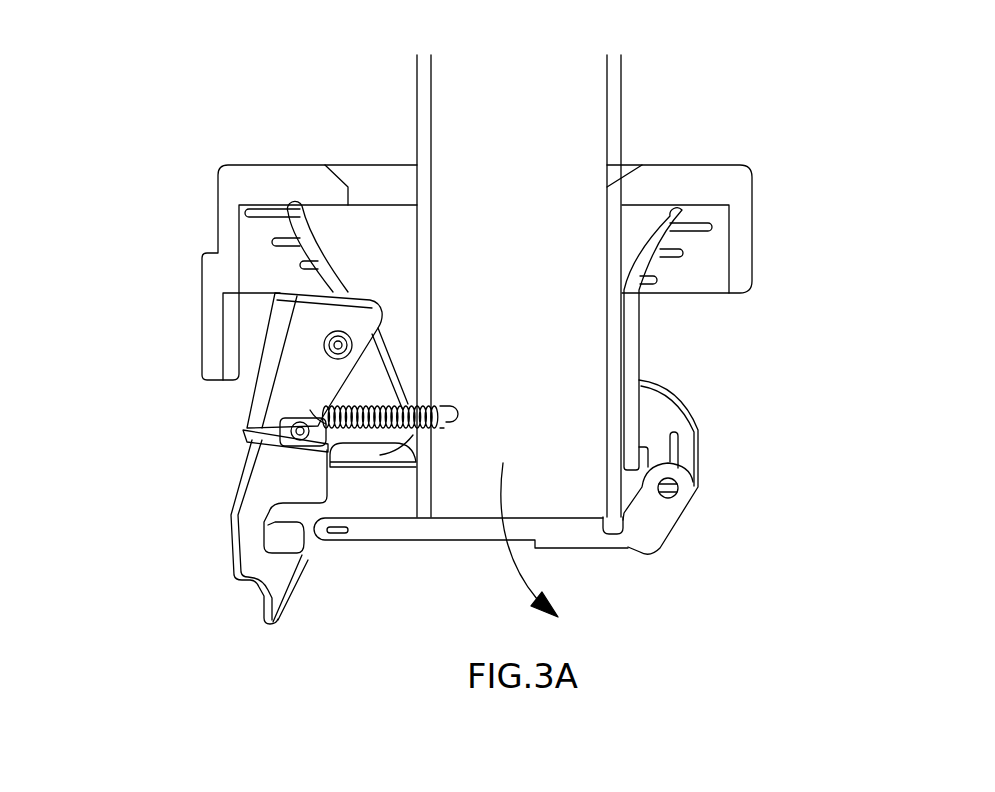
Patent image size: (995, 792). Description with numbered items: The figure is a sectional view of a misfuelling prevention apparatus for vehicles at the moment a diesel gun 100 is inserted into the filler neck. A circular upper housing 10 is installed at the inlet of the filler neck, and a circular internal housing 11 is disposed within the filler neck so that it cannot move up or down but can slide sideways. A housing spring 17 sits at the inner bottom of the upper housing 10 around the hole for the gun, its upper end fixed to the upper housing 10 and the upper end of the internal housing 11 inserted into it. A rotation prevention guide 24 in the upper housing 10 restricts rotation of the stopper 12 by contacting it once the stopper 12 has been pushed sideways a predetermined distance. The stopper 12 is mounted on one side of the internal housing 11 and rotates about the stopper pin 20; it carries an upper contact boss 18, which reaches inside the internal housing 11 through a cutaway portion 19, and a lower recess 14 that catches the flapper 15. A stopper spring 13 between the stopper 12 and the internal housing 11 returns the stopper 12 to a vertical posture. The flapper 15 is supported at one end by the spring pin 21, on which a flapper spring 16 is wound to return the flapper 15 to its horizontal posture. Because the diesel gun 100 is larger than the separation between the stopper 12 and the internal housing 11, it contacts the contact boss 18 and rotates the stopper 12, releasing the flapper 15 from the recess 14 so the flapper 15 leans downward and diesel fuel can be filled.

The diesel gun 100 is at (613, 90).
The upper housing 10 is at (690, 173).
The internal housing 11 is at (632, 340).
The stopper 12 is at (255, 493).
The stopper spring 13 is at (293, 427).
The recess 14 is at (298, 578).
The flapper 15 is at (378, 532).
The flapper spring 16 is at (677, 537).
The housing spring 17 is at (712, 227).
The contact boss 18 is at (388, 433).
The cutaway portion 19 is at (350, 298).
The stopper pin 20 is at (325, 343).
The spring pin 21 is at (680, 484).
The rotation prevention guide 24 is at (208, 292).